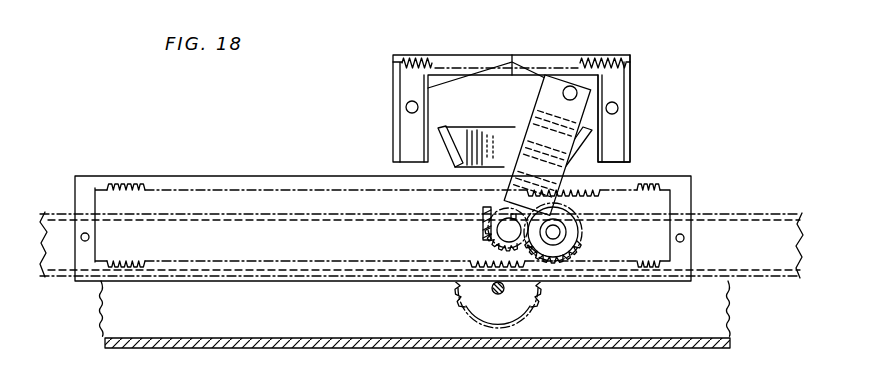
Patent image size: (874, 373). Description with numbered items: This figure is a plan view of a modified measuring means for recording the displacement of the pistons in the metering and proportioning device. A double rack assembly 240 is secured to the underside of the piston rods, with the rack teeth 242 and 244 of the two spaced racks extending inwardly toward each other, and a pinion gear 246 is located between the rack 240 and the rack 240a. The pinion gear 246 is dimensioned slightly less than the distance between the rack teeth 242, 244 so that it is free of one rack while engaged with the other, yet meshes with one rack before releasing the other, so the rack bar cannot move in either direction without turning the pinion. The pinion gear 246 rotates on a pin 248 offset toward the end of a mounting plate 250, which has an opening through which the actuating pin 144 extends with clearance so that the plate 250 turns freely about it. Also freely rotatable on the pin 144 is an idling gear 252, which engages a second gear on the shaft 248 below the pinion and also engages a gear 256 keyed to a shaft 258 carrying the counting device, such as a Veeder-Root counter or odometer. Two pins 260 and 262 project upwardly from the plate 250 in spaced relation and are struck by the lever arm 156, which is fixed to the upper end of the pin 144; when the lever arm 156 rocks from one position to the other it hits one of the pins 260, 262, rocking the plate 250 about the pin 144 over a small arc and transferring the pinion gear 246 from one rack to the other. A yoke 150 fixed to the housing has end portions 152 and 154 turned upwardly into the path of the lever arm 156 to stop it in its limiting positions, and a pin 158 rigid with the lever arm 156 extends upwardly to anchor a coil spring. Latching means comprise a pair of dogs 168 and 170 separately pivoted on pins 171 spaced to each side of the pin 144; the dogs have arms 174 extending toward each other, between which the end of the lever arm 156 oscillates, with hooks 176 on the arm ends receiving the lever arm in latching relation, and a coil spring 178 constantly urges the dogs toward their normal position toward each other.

The pin 144 is at (486, 243).
The yoke 150 is at (527, 148).
The end portion 152 is at (448, 140).
The end portion 154 is at (577, 145).
The lever arm 156 is at (541, 108).
The pin 158 is at (572, 88).
The dog 168 is at (630, 104).
The dog 170 is at (400, 133).
The pins 171 is at (407, 104).
The arms 174 is at (460, 67).
The hooks 176 is at (468, 77).
The coil spring 178 is at (425, 58).
The double rack assembly 240 is at (655, 182).
The rack 240a is at (415, 314).
The rack teeth 242 is at (655, 260).
The rack teeth 244 is at (657, 193).
The pinion gear 246 is at (585, 237).
The pin 248 is at (575, 257).
The mounting plate 250 is at (538, 252).
The idling gear 252 is at (506, 229).
The gear 256 is at (460, 283).
The shaft 258 is at (495, 293).
The pin 260 is at (487, 212).
The pin 262 is at (623, 176).